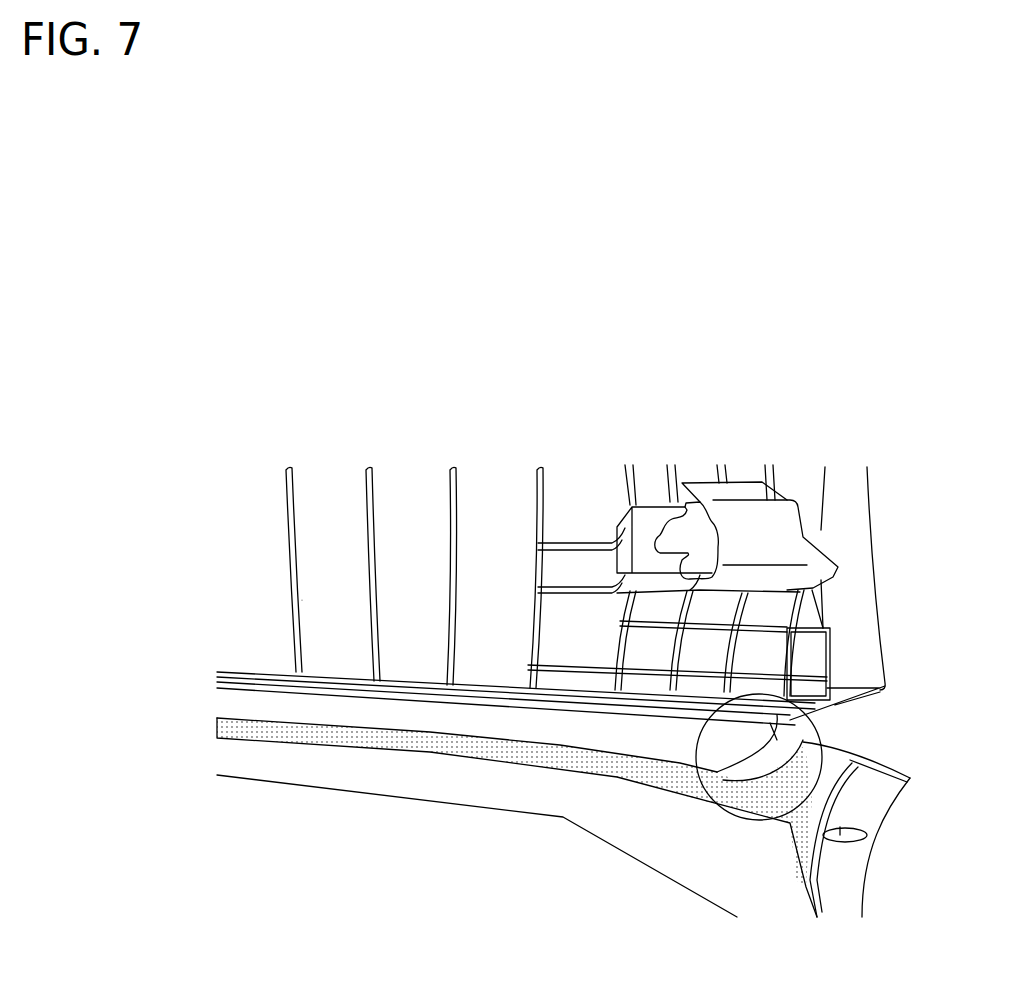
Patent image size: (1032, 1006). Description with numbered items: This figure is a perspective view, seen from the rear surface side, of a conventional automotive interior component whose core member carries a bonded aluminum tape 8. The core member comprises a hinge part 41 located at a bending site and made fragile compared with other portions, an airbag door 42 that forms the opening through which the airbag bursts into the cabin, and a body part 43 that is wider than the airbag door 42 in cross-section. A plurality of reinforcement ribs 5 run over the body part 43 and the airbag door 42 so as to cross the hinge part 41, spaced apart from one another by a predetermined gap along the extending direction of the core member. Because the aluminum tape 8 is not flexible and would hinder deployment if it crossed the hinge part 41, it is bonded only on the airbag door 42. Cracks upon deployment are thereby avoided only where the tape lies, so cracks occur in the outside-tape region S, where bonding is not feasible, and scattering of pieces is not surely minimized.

The reinforcement ribs 5 is at (288, 466).
The body part 43 is at (326, 521).
The hinge part 41 is at (270, 672).
The airbag door 42 is at (570, 712).
The aluminum tape 8 is at (218, 729).
The outside-tape region S is at (815, 788).